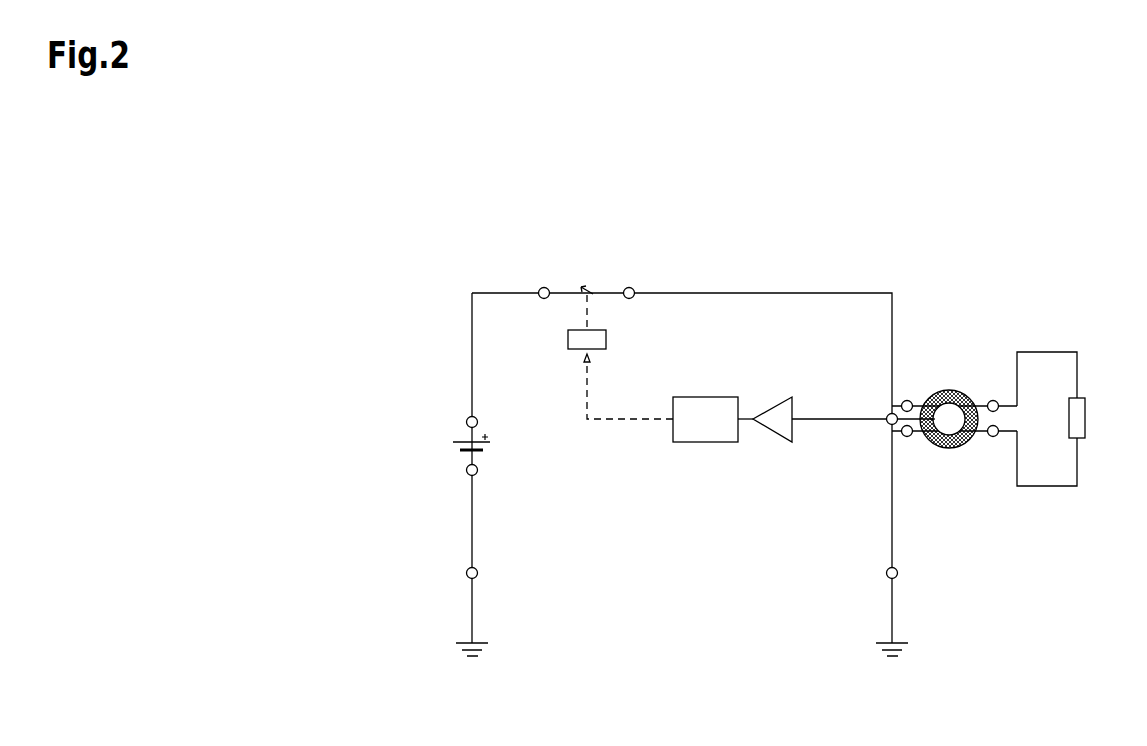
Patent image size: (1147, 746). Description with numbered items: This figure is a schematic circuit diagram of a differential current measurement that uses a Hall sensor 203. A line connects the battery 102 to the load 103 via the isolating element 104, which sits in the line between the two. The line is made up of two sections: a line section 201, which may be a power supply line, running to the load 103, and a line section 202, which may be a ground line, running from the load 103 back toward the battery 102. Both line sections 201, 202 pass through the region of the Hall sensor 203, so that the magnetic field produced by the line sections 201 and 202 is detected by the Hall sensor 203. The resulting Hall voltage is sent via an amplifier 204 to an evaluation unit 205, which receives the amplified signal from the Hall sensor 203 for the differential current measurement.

The battery 102 is at (446, 468).
The load 103 is at (1075, 419).
The isolating element 104 is at (584, 299).
The line section 201 is at (985, 400).
The line section 202 is at (920, 440).
The Hall sensor 203 is at (935, 392).
The amplifier 204 is at (770, 430).
The evaluation unit 205 is at (685, 442).